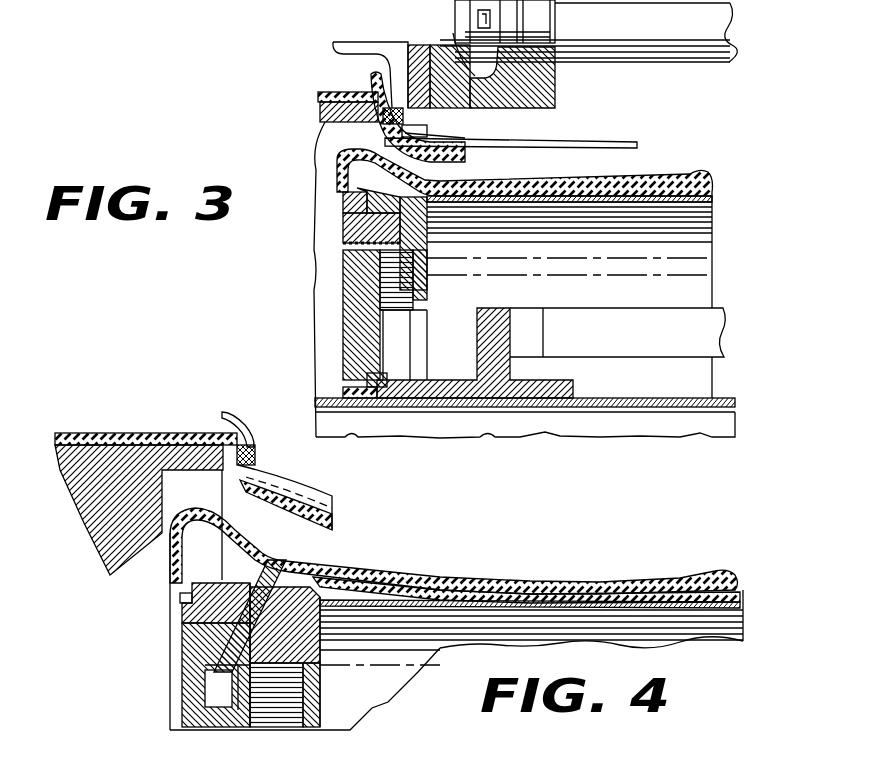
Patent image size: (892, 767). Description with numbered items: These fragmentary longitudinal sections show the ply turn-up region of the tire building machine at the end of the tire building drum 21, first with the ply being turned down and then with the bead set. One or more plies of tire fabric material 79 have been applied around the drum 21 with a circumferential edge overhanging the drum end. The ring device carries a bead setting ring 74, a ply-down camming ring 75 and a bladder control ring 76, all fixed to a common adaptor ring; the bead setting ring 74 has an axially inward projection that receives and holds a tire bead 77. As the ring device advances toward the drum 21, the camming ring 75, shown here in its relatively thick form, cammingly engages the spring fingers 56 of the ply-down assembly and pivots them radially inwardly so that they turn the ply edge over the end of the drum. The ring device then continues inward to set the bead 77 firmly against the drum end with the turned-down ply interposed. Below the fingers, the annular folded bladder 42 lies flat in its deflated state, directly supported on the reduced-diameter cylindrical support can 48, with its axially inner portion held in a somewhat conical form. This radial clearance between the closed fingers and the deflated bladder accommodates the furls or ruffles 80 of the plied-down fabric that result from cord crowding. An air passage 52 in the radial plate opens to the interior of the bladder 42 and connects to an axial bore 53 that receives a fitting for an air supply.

In FIG. 3, the tire building drum 21 is at (320, 108).
In FIG. 4, the tire building drum 21 is at (75, 491).
In FIG. 4, the annular folded bladder 42 is at (415, 568).
In FIG. 3, the cylindrical support can 48 is at (713, 222).
In FIG. 4, the cylindrical support can 48 is at (473, 606).
In FIG. 4, the air passage 52 is at (182, 637).
In FIG. 4, the axial bore 53 is at (185, 692).
In FIG. 3, the spring finger 56 is at (598, 142).
In FIG. 3, the bead setting ring 74 is at (393, 44).
In FIG. 3, the ply-down camming ring 75 is at (430, 134).
In FIG. 3, the bladder control ring 76 is at (340, 41).
In FIG. 3, the tire bead 77 is at (372, 78).
In FIG. 4, the tire bead 77 is at (258, 458).
In FIG. 3, the tire fabric material ply 79 is at (335, 92).
In FIG. 4, the tire fabric material ply 79 is at (100, 432).
In FIG. 4, the fabric furls 80 is at (335, 508).